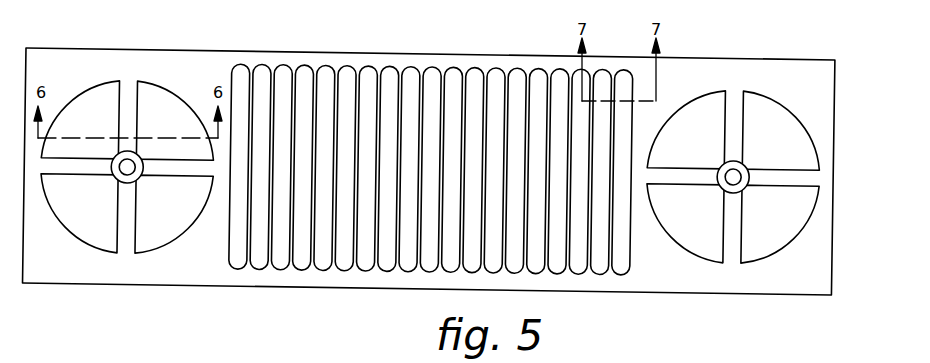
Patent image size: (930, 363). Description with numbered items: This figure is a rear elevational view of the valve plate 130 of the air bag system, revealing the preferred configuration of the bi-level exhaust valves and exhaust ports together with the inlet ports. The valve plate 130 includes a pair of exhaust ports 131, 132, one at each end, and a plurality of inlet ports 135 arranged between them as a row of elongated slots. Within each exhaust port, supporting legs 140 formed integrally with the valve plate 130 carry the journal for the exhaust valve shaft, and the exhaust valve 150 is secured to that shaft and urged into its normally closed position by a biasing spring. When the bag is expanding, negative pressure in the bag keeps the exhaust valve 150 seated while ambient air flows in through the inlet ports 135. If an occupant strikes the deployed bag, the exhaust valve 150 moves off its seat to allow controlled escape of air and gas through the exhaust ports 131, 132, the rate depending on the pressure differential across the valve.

The valve plate 130 is at (431, 144).
The exhaust port 131 is at (139, 173).
The exhaust port 132 is at (775, 98).
The inlet ports 135 is at (343, 65).
The supporting legs 140 is at (140, 230).
The exhaust valve 150 is at (100, 233).